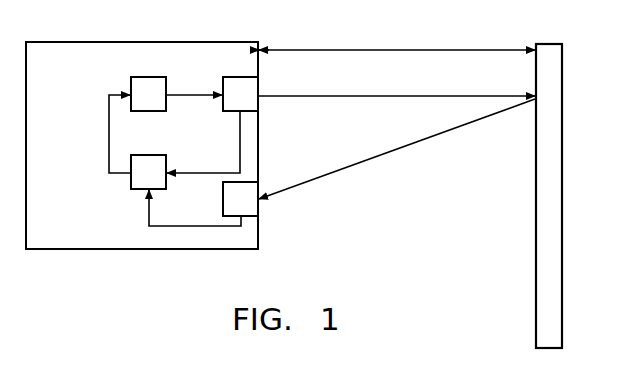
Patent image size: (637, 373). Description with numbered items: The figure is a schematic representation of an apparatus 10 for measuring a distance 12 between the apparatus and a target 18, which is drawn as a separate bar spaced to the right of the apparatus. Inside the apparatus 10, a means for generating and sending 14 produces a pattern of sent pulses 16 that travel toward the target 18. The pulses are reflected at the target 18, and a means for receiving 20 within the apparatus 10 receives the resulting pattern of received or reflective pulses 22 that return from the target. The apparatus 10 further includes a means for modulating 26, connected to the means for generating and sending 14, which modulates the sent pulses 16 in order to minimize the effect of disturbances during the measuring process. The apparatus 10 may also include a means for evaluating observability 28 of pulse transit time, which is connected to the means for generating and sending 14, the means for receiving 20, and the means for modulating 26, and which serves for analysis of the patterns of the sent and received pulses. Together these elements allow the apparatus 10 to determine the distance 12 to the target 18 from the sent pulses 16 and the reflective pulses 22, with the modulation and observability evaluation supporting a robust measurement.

The apparatus 10 is at (93, 264).
The distance 12 is at (407, 50).
The means for generating and sending 14 is at (240, 94).
The sent pulses 16 is at (413, 95).
The target 18 is at (553, 118).
The means for receiving 20 is at (240, 199).
The received or reflective pulses 22 is at (387, 153).
The means for modulating 26 is at (148, 94).
The means for evaluating observability 28 is at (148, 172).